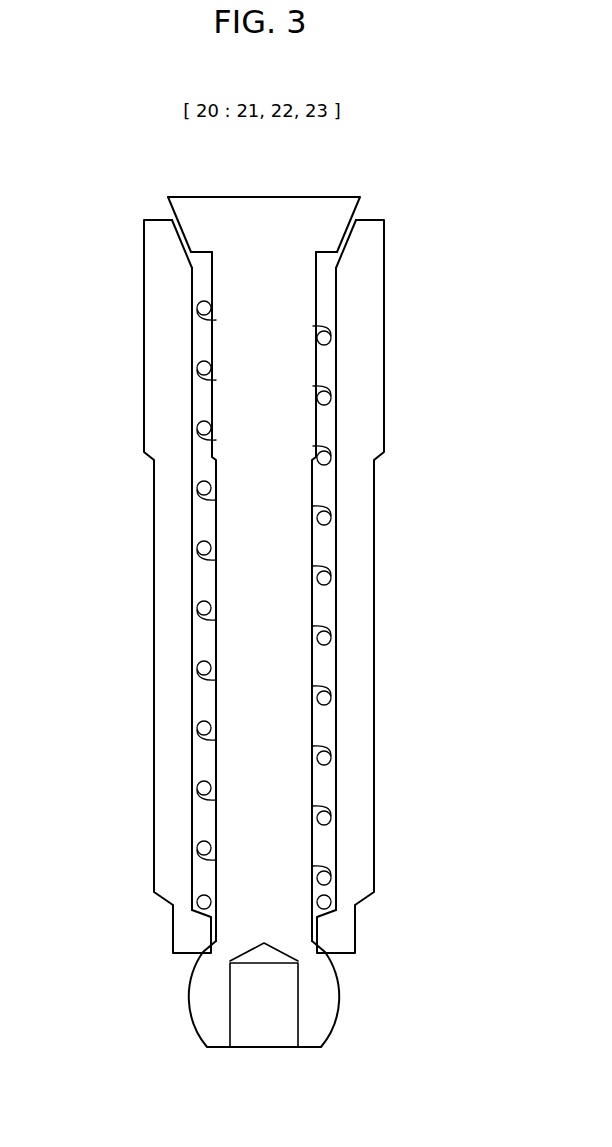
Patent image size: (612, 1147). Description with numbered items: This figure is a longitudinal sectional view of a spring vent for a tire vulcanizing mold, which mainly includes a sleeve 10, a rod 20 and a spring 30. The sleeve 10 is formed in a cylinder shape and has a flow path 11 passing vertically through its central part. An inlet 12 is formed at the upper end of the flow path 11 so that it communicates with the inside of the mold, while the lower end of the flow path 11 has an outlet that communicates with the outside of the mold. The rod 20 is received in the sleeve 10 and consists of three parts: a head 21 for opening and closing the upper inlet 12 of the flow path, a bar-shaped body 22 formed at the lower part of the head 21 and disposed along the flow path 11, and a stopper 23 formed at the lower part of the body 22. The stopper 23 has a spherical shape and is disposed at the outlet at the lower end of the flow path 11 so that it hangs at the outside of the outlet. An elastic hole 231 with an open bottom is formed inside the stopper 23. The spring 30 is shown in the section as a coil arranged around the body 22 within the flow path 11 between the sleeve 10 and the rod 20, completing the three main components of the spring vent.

The sleeve 10 is at (139, 536).
The flow path 11 is at (195, 650).
The inlet 12 is at (178, 243).
The rod 20 is at (259, 622).
The head 21 is at (296, 204).
The body 22 is at (293, 598).
The stopper 23 is at (190, 1003).
The elastic hole 231 is at (268, 1024).
The spring 30 is at (197, 790).